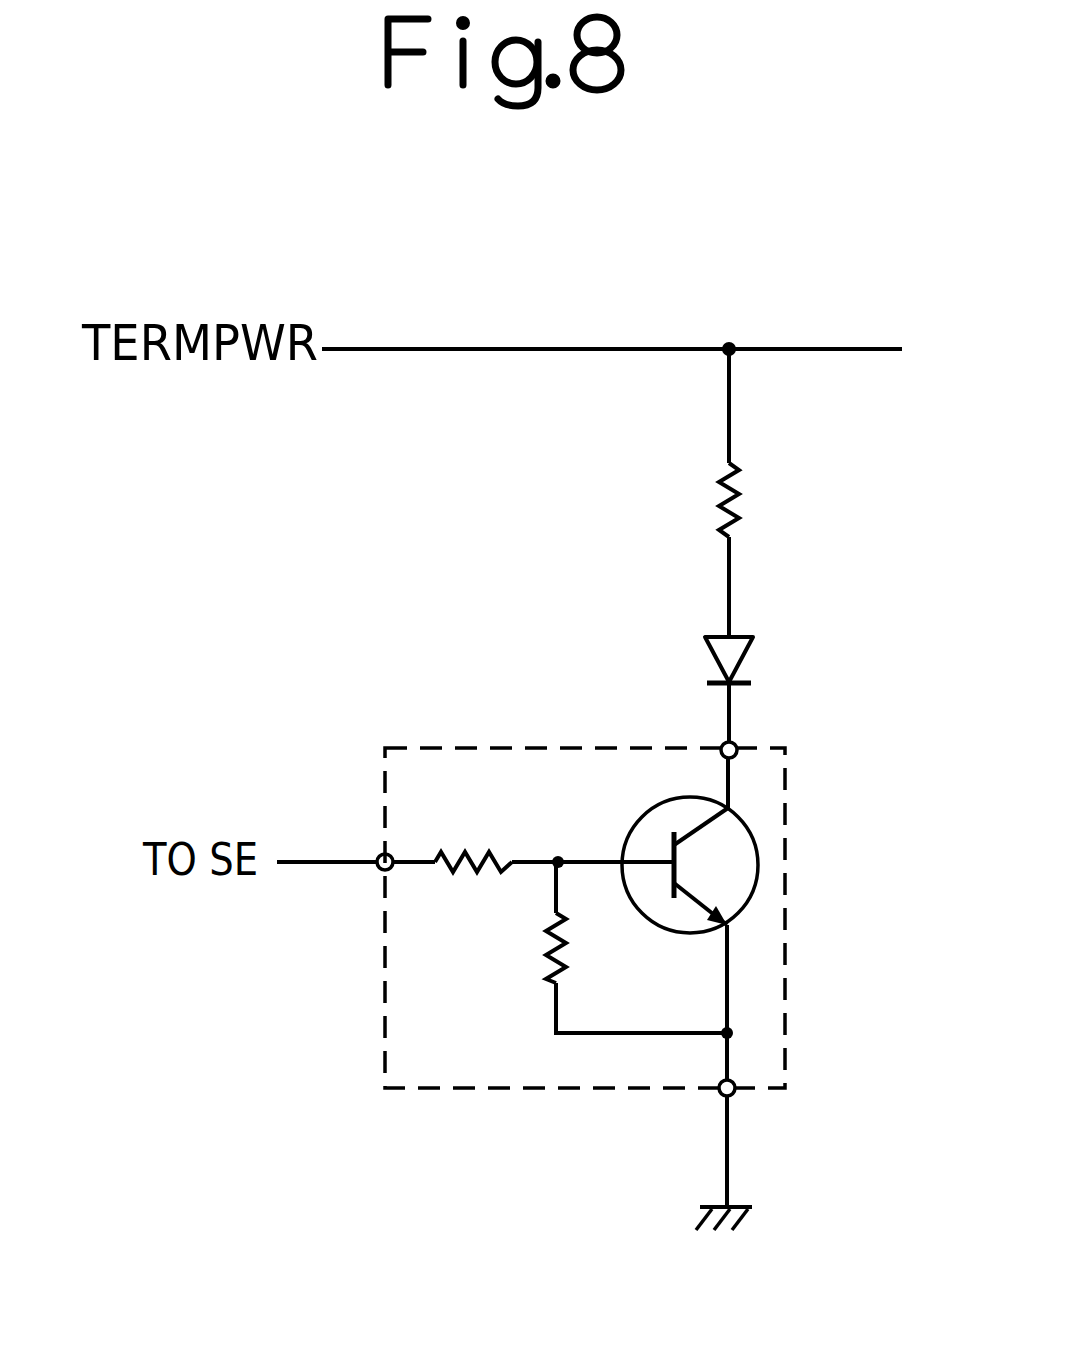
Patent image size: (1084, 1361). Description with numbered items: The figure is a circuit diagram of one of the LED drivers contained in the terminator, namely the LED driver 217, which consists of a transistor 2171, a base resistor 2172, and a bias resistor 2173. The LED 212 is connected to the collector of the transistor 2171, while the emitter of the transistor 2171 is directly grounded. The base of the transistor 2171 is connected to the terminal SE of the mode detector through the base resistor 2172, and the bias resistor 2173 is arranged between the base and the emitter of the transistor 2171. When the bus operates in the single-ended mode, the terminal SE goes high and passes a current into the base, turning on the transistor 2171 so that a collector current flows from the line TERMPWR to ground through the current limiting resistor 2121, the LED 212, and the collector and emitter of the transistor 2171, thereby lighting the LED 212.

The current limiting resistor 2121 is at (740, 486).
The LED 212 is at (756, 660).
The LED driver 217 is at (787, 790).
The transistor 2171 is at (758, 858).
The base resistor 2172 is at (472, 850).
The bias resistor 2173 is at (545, 940).